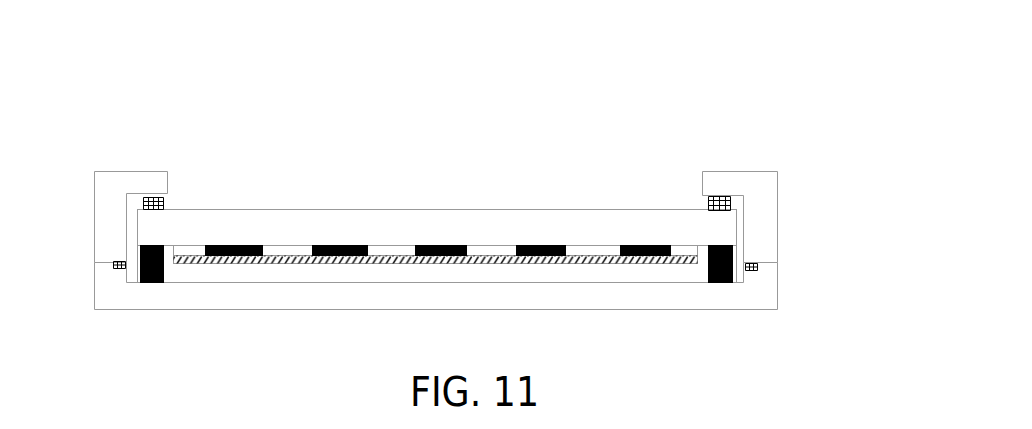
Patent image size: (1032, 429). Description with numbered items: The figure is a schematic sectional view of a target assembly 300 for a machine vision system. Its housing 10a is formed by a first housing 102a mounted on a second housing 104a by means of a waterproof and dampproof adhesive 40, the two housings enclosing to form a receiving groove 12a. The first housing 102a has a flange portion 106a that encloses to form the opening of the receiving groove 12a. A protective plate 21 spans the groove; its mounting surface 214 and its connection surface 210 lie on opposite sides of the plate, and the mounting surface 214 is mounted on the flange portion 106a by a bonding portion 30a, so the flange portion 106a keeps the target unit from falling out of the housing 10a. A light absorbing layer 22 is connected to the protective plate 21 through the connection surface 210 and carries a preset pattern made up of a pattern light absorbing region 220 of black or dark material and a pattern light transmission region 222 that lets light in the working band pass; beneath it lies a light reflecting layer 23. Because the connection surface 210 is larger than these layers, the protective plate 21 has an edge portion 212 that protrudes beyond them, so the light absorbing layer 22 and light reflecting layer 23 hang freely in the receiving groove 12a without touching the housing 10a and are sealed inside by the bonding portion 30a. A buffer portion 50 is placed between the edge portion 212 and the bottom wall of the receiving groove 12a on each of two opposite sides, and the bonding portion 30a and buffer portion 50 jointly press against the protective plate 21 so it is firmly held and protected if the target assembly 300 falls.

The target assembly 300 is at (488, 97).
The housing 10a is at (473, 200).
The first housing 102a is at (776, 220).
The second housing 104a is at (475, 285).
The flange portion 106a is at (127, 177).
The edge portion 212 is at (136, 211).
The adhesive 40 is at (118, 262).
The light absorbing layer 22 is at (438, 181).
The pattern light absorbing region 220 is at (220, 246).
The pattern light transmission region 222 is at (316, 198).
The mounting surface 214 is at (462, 210).
The protective plate 21 is at (622, 215).
The bonding portion 30a is at (717, 194).
The buffer portion 50 is at (150, 282).
The light reflecting layer 23 is at (478, 257).
The connection surface 210 is at (593, 246).
The receiving groove 12a is at (692, 271).